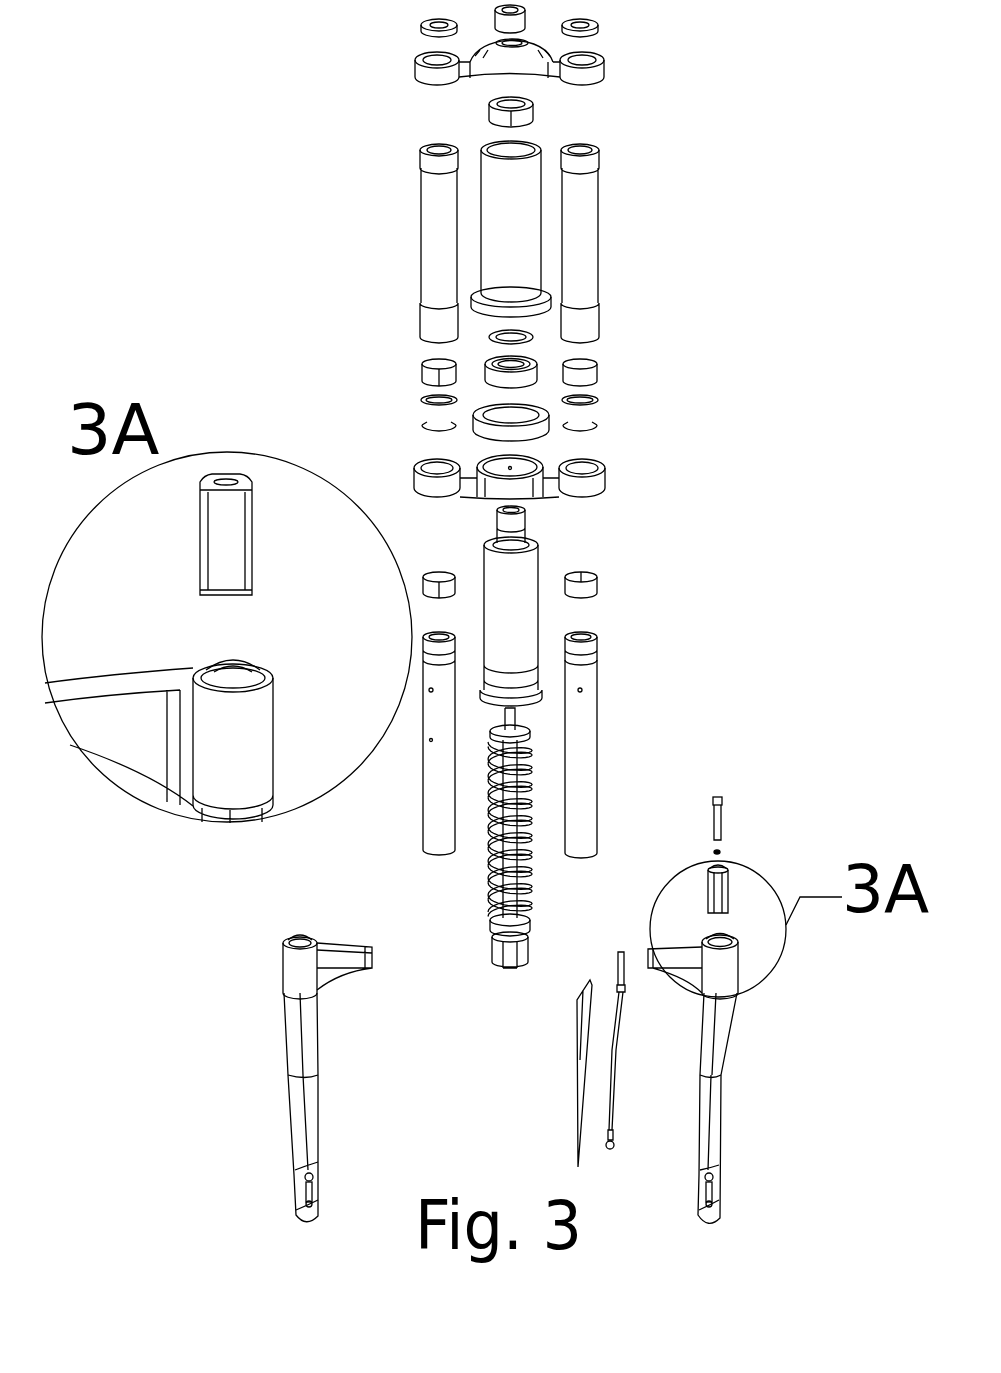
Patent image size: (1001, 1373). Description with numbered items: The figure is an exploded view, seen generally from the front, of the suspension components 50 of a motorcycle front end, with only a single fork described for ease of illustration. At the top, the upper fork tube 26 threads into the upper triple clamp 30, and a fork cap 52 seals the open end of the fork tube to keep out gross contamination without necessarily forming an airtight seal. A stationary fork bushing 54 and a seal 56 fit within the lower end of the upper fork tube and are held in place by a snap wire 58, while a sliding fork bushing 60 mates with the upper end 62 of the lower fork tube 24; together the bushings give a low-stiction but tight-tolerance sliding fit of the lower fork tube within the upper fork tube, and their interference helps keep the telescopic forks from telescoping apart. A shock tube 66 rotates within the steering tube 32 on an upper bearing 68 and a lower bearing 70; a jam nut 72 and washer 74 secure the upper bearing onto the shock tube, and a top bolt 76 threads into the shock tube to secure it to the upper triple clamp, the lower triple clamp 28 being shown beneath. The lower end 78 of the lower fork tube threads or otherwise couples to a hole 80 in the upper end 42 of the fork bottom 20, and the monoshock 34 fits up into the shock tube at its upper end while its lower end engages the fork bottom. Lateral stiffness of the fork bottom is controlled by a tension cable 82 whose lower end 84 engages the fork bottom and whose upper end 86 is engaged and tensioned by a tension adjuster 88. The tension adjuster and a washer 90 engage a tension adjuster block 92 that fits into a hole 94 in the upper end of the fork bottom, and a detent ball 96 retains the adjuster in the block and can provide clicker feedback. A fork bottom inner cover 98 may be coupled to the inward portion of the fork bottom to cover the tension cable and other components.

In FIG. 3, the fork bottom 20 is at (736, 1023).
In FIG. 3, the tube 24 is at (613, 739).
In FIG. 3, the upper fork tube 26 is at (590, 225).
In FIG. 3, the lower clamp 28 is at (598, 488).
In FIG. 3, the upper triple clamp 30 is at (600, 70).
In FIG. 3, the steering tube 32 is at (493, 175).
In FIG. 3, the monoshock 34 is at (536, 905).
In FIG. 3, the upper end of the fork bottom 42 is at (740, 966).
In FIG. 3A, the upper end of the fork bottom 42 is at (245, 737).
In FIG. 3, the suspension components 50 is at (487, 1083).
In FIG. 3, the fork cap 52 is at (600, 25).
In FIG. 3, the stationary fork bushing 54 is at (598, 374).
In FIG. 3, the seal 56 is at (598, 402).
In FIG. 3, the snap wire 58 is at (598, 430).
In FIG. 3, the sliding fork bushing 60 is at (600, 588).
In FIG. 3, the upper end of the lower fork tube 62 is at (600, 655).
In FIG. 3, the shock tube 66 is at (530, 565).
In FIG. 3, the upper bearing 68 is at (486, 365).
In FIG. 3, the lower bearing 70 is at (478, 418).
In FIG. 3, the jam nut 72 is at (535, 116).
In FIG. 3, the washer 74 is at (533, 337).
In FIG. 3, the top bolt 76 is at (495, 12).
In FIG. 3, the lower end of the lower fork tube 78 is at (590, 847).
In FIG. 3A, the hole 80 is at (235, 668).
In FIG. 3, the tension cable 82 is at (619, 1060).
In FIG. 3, the lower end of the tension cable 84 is at (613, 1150).
In FIG. 3, the upper end of the tension cable 86 is at (618, 965).
In FIG. 3, the tension adjuster 88 is at (714, 797).
In FIG. 3, the washer 90 is at (722, 850).
In FIG. 3, the tension adjuster block 92 is at (720, 887).
In FIG. 3A, the tension adjuster block 92 is at (212, 517).
In FIG. 3A, the hole 94 is at (213, 650).
In FIG. 3, the detent ball 96 is at (734, 803).
In FIG. 3, the fork bottom inner cover 98 is at (578, 1004).